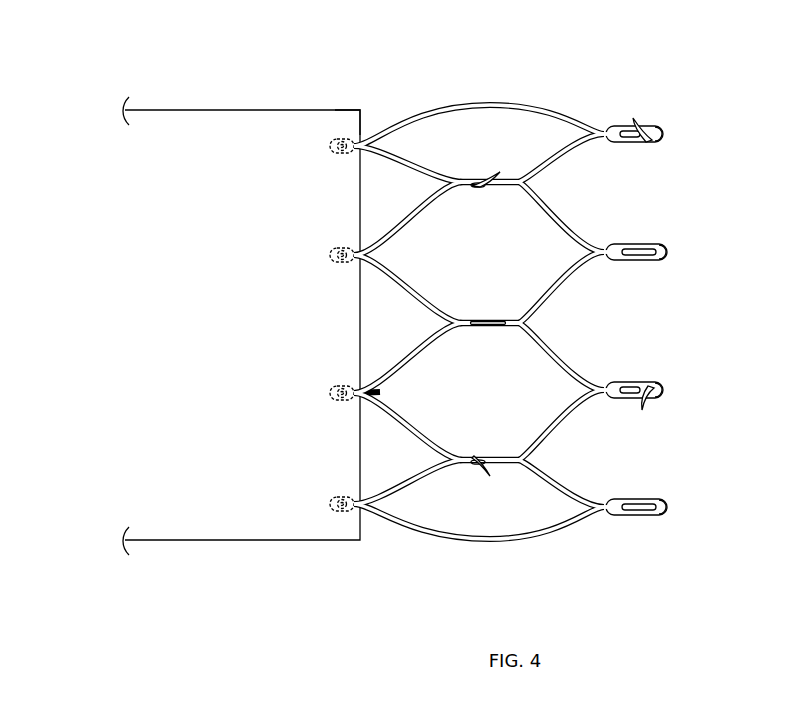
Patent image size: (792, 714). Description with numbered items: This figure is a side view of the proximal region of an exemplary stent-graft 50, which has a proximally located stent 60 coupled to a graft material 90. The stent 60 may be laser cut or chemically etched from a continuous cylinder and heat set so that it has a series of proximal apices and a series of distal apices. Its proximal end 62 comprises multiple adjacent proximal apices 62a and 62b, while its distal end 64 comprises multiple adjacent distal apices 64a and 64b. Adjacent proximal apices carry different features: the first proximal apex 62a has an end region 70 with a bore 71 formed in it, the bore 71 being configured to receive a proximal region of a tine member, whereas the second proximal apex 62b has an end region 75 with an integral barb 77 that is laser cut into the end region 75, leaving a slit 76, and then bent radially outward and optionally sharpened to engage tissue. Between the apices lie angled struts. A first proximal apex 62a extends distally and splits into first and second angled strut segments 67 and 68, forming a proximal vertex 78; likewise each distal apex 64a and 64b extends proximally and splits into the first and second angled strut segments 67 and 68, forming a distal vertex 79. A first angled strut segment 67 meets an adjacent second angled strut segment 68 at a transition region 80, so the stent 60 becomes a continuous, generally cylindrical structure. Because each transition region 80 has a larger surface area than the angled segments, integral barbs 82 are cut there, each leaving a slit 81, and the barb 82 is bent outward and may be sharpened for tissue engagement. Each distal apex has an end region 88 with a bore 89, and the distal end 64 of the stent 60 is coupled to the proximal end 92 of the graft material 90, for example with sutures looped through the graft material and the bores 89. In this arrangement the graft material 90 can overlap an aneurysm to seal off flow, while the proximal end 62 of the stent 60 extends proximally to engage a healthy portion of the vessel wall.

The stent-graft 50 is at (210, 287).
The stent 60 is at (504, 312).
The proximal end 62 is at (690, 372).
The first proximal apex 62a is at (680, 253).
The second proximal apex 62b is at (676, 134).
The distal end 64 is at (310, 381).
The distal apex 64a is at (333, 256).
The distal apex 64b is at (299, 304).
The first angled strut segment 67 is at (422, 218).
The second angled strut segment 68 is at (578, 298).
The end region 70 is at (643, 246).
The bore 71 is at (648, 262).
The end region 75 is at (662, 145).
The slit 76 is at (630, 150).
The barb 77 is at (633, 121).
The proximal vertex 78 is at (580, 255).
The distal vertex 79 is at (370, 395).
The transition region 80 is at (480, 290).
The slit 81 is at (484, 190).
The barb 82 is at (491, 176).
The end region 88 is at (343, 415).
The bore 89 is at (346, 380).
The graft material 90 is at (241, 302).
The proximal end 92 is at (348, 118).